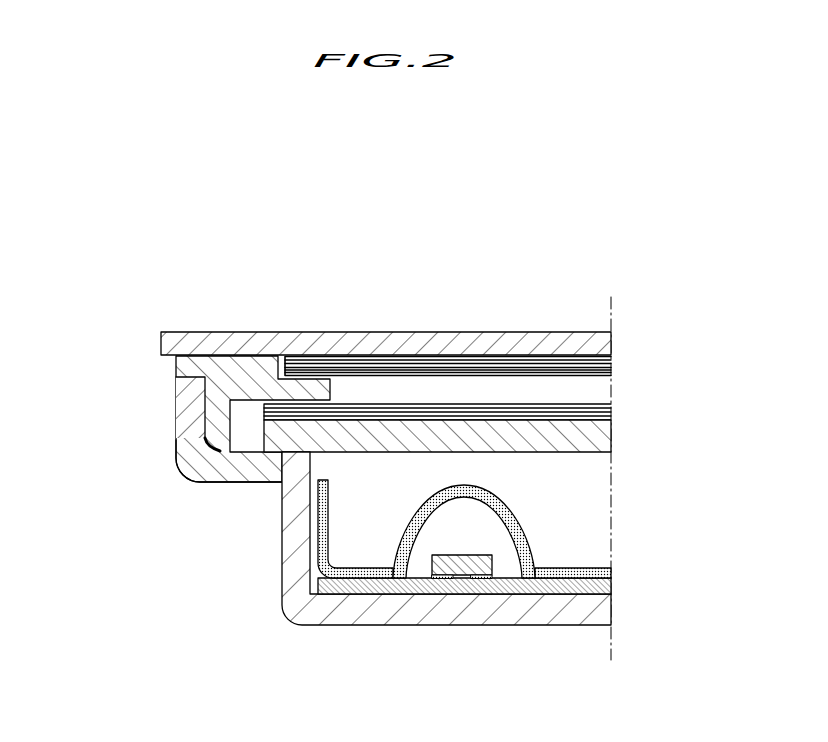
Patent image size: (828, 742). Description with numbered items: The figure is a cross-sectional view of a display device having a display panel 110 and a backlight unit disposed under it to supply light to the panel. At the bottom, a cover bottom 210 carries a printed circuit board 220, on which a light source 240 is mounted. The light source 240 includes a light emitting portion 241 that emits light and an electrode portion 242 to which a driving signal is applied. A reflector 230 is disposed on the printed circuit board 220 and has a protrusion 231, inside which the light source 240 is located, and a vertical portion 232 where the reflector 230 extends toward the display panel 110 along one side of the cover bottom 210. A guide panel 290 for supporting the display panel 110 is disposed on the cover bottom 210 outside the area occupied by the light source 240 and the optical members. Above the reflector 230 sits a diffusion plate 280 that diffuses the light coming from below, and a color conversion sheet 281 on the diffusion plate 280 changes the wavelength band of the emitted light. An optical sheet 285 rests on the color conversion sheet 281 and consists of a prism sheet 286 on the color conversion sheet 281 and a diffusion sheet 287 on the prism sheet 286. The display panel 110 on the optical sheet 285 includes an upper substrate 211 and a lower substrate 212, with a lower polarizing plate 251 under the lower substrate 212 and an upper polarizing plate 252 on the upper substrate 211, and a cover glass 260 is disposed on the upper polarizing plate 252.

The display panel 110 is at (342, 283).
The upper substrate 211 is at (342, 356).
The lower substrate 212 is at (398, 368).
The lower polarizing plate 251 is at (521, 375).
The upper polarizing plate 252 is at (465, 362).
The cover glass 260 is at (604, 346).
The diffusion plate 280 is at (604, 436).
The optical sheet 285 is at (110, 393).
The prism sheet 286 is at (264, 416).
The diffusion sheet 287 is at (264, 408).
The guide panel 290 is at (185, 367).
The color conversion sheet 281 is at (197, 474).
The cover bottom 210 is at (604, 612).
The printed circuit board 220 is at (604, 584).
The reflector 230 is at (212, 513).
The protrusion 231 is at (409, 515).
The vertical portion 232 is at (320, 538).
The light source 240 is at (485, 670).
The light emitting portion 241 is at (463, 568).
The electrode portion 242 is at (443, 578).